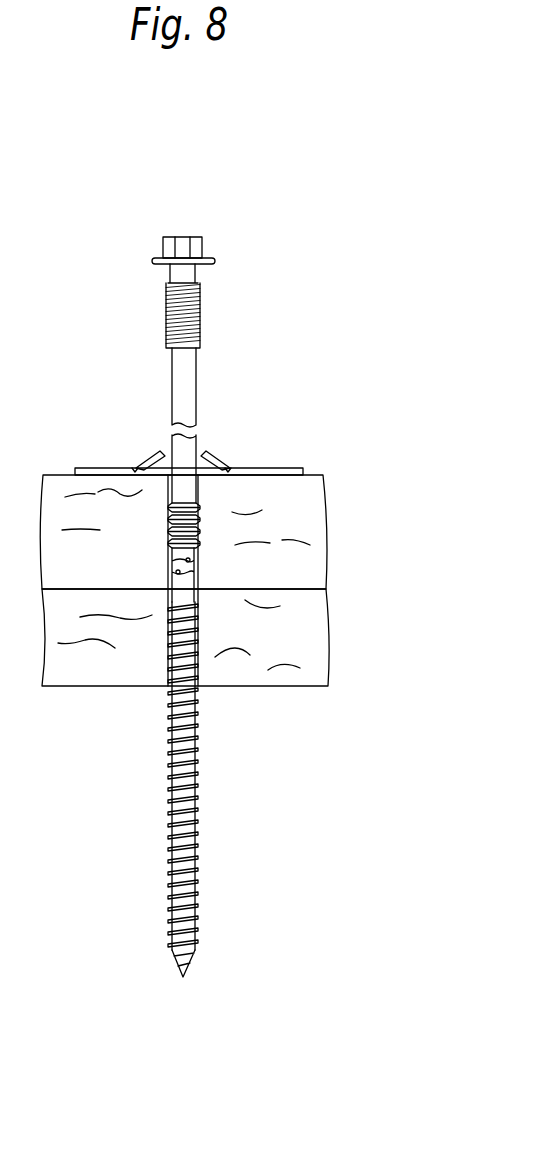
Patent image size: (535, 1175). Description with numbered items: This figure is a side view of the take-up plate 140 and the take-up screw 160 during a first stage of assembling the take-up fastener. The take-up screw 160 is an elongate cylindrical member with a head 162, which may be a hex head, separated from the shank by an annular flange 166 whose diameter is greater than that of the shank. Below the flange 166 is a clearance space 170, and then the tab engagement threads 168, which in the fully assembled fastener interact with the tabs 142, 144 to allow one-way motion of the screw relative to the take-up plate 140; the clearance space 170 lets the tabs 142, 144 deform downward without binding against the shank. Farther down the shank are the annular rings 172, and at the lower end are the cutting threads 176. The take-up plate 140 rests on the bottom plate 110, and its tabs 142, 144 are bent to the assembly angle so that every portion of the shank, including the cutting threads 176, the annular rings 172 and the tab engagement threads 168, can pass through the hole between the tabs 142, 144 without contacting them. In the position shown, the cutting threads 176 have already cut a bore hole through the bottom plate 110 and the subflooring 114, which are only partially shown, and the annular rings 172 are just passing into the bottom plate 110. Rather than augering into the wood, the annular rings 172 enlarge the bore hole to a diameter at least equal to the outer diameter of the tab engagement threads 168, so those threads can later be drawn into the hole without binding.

The bottom plate 110 is at (317, 518).
The sub-flooring 114 is at (318, 650).
The take-up plate 140 is at (301, 474).
The tab 142 is at (156, 456).
The tab 144 is at (215, 446).
The take-up screw 160 is at (198, 577).
The head 162 is at (181, 240).
The annular flange 166 is at (156, 261).
The tab engagement threads 168 is at (200, 318).
The clearance space 170 is at (196, 276).
The annular rings 172 is at (167, 527).
The cutting threads 176 is at (198, 855).